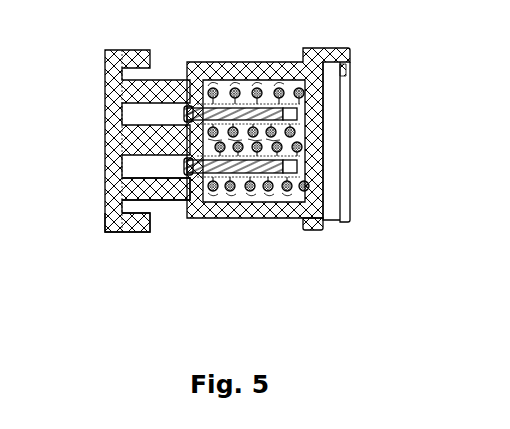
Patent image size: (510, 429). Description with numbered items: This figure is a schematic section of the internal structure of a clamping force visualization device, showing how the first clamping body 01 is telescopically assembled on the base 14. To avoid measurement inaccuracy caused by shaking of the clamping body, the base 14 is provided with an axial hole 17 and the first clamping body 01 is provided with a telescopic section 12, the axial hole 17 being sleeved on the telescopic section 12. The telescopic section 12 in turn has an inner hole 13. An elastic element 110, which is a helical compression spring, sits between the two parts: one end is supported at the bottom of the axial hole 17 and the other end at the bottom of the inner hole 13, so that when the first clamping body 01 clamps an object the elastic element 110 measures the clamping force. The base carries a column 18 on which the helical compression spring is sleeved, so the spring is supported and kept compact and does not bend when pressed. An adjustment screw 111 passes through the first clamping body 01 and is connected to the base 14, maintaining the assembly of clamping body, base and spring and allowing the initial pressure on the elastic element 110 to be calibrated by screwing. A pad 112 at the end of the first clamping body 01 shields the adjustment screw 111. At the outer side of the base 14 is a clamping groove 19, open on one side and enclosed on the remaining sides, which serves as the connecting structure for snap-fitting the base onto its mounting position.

The first clamping body 01 is at (141, 118).
The adjustment screw 111 is at (163, 63).
The elastic element 110 is at (239, 64).
The axial hole 17 is at (268, 111).
The column 18 is at (267, 148).
The pad 112 is at (104, 252).
The telescopic section 12 is at (156, 235).
The inner hole 13 is at (242, 224).
The base 14 is at (324, 252).
The clamping groove 19 is at (359, 177).